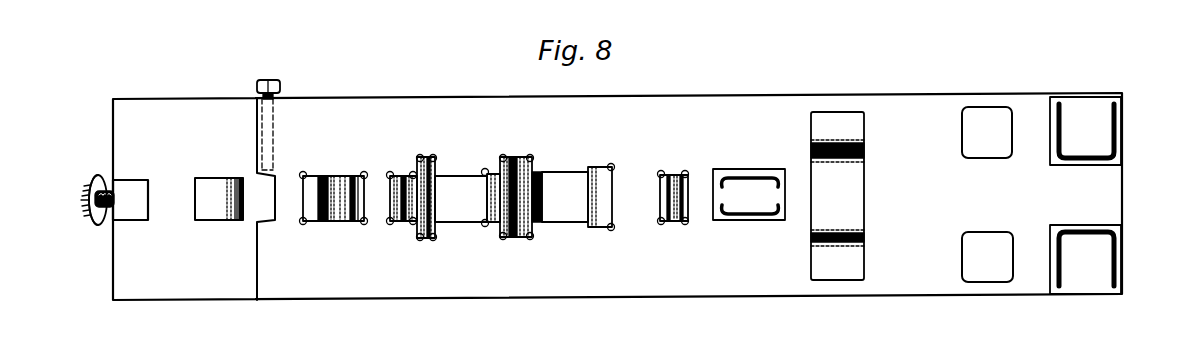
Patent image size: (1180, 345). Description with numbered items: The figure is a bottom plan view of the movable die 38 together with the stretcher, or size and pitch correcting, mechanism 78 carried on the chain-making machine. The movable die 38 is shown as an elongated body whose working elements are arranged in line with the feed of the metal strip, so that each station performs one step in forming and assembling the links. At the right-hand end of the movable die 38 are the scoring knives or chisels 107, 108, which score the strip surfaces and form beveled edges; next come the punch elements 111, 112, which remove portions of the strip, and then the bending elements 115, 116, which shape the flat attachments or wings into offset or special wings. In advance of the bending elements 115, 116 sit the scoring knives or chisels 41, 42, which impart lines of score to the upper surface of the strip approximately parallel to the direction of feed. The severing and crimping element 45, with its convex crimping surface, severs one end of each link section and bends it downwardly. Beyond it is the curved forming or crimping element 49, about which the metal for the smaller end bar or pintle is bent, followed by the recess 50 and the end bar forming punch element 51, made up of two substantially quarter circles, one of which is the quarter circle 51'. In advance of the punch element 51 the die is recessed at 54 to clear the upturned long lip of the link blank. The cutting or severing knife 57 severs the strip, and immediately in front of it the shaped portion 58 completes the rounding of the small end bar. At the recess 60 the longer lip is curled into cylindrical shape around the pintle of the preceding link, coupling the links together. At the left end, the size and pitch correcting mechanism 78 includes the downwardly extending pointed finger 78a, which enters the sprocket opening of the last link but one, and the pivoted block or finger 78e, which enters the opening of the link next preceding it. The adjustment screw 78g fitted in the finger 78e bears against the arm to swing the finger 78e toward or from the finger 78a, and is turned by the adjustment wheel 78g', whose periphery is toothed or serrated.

The movable die 38 is at (782, 105).
The size and pitch correcting mechanism 78 is at (234, 190).
The block or finger 78e is at (137, 182).
The adjustment screw 78g is at (94, 217).
The adjustment wheel 78g' is at (90, 183).
The finger 78a is at (222, 180).
The recess of the movable die 60 is at (334, 187).
The shaped portion of the movable die 58 is at (397, 178).
The cutting or severing knife 57 is at (426, 213).
The recess of the movable die 54 is at (467, 198).
The end bar forming punch element 51 is at (517, 184).
The quarter circle 51' is at (543, 204).
The recess 50 is at (565, 197).
The curved forming or crimping element 49 is at (593, 202).
The severing and crimping element 45 is at (683, 183).
The scoring knife or chisel 41 is at (758, 178).
The scoring knife or chisel 42 is at (752, 216).
The bending element 116 is at (837, 196).
The bending element 115 is at (837, 253).
The punch element 112 is at (987, 132).
The punch element 111 is at (987, 257).
The scoring knife or chisel 108 is at (1117, 114).
The scoring knife or chisel 107 is at (1117, 268).